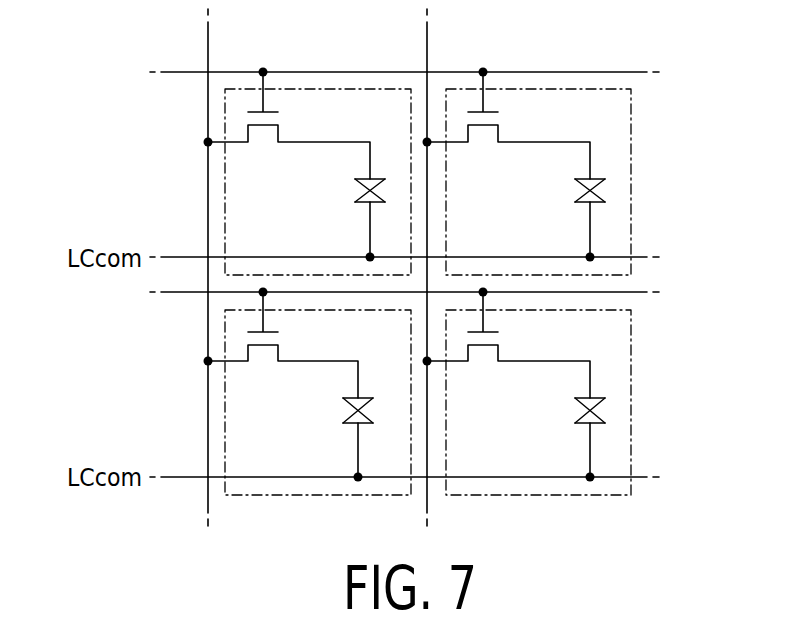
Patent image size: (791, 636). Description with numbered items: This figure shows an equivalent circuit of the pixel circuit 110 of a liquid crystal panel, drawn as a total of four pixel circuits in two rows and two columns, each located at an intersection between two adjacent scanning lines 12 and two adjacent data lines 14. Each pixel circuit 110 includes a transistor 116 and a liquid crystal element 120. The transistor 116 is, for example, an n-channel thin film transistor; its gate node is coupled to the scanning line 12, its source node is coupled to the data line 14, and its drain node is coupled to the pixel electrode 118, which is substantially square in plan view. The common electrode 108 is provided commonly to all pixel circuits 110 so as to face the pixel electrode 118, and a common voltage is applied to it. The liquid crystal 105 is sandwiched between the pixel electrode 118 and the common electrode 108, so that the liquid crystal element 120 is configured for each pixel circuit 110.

The scanning line 12 is at (189, 75).
The data line 14 is at (209, 57).
The pixel circuit 110 is at (374, 62).
The transistor 116 is at (279, 139).
The liquid crystal element 120 is at (424, 321).
The pixel electrode 118 is at (362, 177).
The liquid crystal 105 is at (360, 191).
The common electrode 108 is at (451, 312).